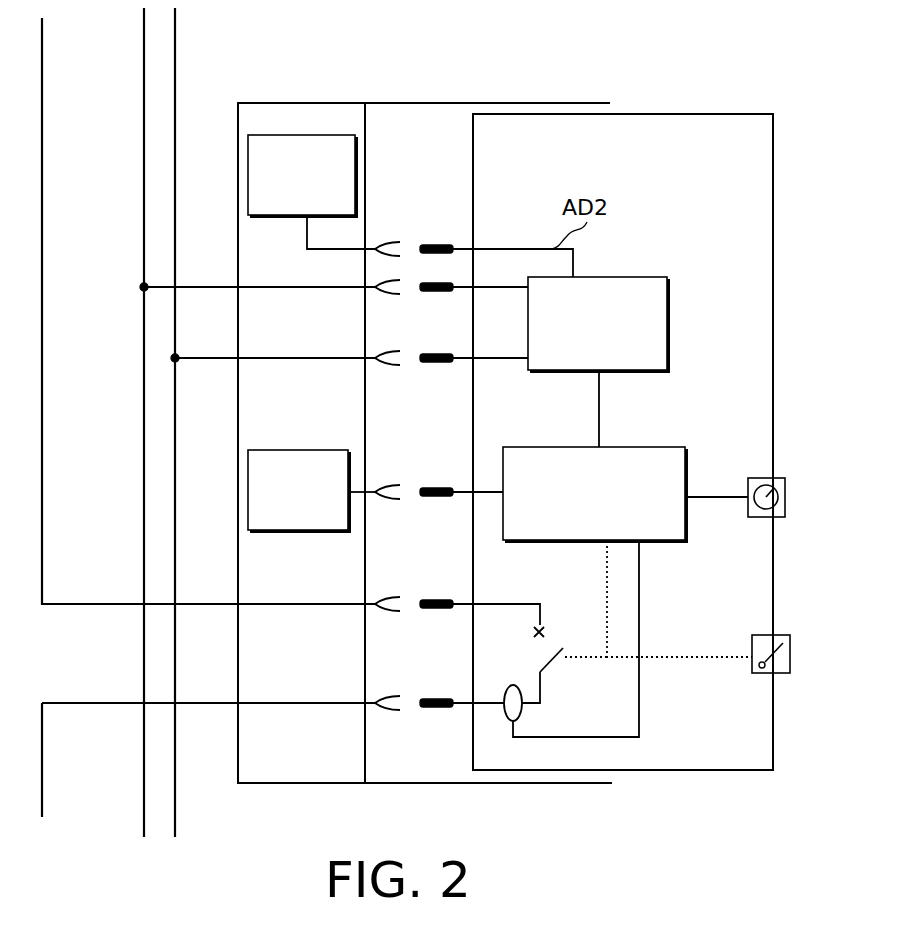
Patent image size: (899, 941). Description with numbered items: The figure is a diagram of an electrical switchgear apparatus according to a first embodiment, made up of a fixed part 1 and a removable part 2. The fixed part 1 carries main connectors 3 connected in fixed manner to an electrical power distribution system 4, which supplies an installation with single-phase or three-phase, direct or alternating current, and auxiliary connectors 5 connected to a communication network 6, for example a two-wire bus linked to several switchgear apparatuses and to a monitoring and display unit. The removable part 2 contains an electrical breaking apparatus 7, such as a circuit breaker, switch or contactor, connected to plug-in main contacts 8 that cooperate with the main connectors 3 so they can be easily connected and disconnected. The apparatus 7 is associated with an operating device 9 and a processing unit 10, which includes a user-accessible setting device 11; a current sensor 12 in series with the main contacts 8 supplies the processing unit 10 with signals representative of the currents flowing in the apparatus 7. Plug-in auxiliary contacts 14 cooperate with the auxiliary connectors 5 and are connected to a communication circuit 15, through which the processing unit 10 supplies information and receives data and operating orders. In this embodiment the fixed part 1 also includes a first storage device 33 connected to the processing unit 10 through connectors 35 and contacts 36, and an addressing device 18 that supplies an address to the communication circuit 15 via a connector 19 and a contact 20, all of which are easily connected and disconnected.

The fixed part 1 is at (416, 103).
The removable part 2 is at (773, 255).
The main connectors 3 is at (392, 696).
The electrical power distribution system 4 is at (42, 702).
The auxiliary connectors 5 is at (392, 354).
The communication network 6 is at (180, 63).
The electrical breaking apparatus 7 is at (546, 608).
The main contacts 8 is at (443, 699).
The operating device 9 is at (790, 637).
The processing unit 10 is at (686, 460).
The setting device 11 is at (785, 478).
The current sensor 12 is at (523, 707).
The auxiliary contacts 14 is at (443, 355).
The communication circuit 15 is at (667, 318).
The addressing device 18 is at (287, 135).
The connector 19 is at (392, 242).
The contact 20 is at (440, 245).
The first storage device 33 is at (330, 450).
The connectors 35 is at (392, 486).
The contacts 36 is at (440, 488).